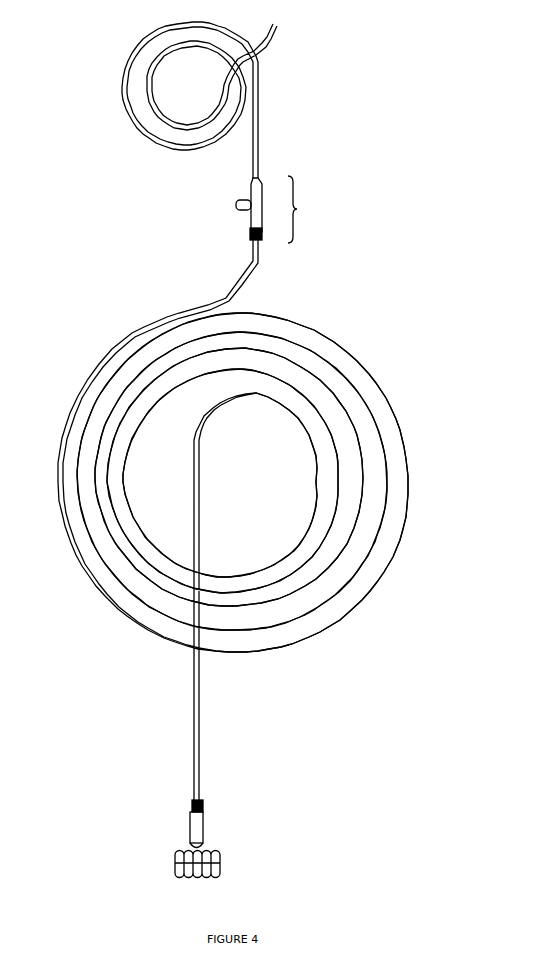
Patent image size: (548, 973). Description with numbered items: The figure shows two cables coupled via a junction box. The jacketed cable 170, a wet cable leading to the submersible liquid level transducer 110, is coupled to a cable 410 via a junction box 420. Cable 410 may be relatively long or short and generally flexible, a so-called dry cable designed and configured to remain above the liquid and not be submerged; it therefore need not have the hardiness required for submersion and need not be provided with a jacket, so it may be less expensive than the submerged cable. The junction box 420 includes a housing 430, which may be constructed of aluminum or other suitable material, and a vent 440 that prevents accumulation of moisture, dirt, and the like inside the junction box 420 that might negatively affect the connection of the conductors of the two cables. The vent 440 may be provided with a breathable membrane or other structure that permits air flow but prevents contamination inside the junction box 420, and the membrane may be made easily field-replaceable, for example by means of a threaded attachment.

The submersible liquid level transducer 110 is at (175, 855).
The jacketed cable 170 is at (403, 530).
The cable 410 is at (259, 128).
The junction box 420 is at (305, 209).
The housing 430 is at (265, 186).
The vent 440 is at (236, 203).